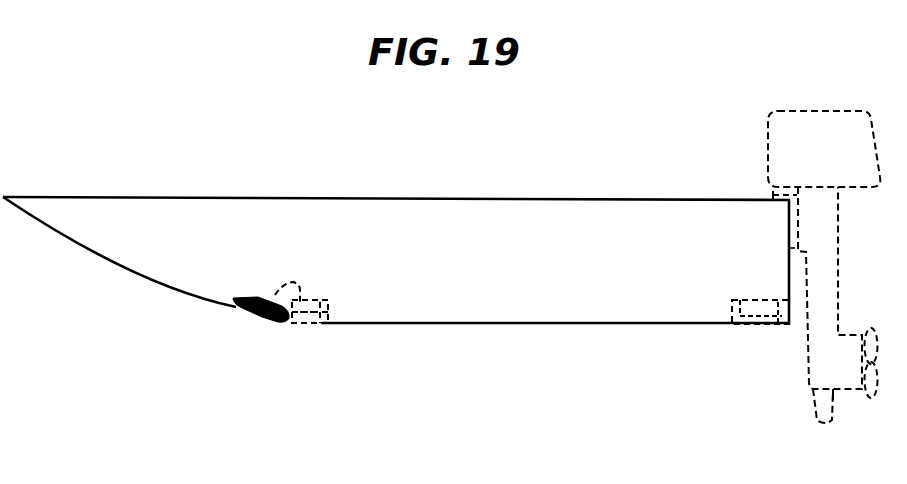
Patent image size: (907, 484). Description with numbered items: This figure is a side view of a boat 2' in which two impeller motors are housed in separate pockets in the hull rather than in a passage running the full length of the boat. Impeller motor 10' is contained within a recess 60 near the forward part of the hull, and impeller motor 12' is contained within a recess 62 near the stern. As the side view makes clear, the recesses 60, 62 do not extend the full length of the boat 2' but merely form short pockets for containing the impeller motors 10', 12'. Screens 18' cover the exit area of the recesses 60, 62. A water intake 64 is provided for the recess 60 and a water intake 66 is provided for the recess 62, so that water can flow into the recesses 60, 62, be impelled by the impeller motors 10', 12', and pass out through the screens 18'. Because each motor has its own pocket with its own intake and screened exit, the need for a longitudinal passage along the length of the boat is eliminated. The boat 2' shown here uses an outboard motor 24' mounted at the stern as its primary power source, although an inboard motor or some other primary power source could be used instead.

The boat 2' is at (396, 240).
The impeller motor 10' is at (347, 289).
The impeller motor 12' is at (737, 286).
The screens 18' is at (248, 330).
The outboard motor 24' is at (824, 236).
The recess 60 is at (305, 289).
The recess 62 is at (732, 301).
The water intake 64 is at (311, 323).
The water intake 66 is at (746, 330).